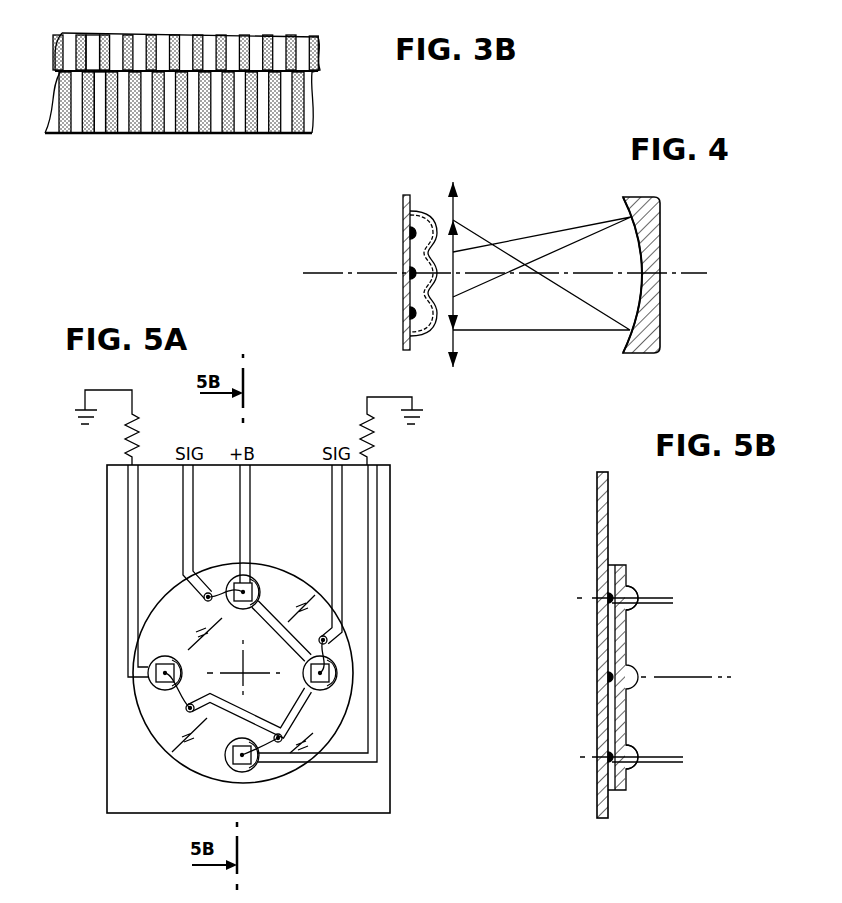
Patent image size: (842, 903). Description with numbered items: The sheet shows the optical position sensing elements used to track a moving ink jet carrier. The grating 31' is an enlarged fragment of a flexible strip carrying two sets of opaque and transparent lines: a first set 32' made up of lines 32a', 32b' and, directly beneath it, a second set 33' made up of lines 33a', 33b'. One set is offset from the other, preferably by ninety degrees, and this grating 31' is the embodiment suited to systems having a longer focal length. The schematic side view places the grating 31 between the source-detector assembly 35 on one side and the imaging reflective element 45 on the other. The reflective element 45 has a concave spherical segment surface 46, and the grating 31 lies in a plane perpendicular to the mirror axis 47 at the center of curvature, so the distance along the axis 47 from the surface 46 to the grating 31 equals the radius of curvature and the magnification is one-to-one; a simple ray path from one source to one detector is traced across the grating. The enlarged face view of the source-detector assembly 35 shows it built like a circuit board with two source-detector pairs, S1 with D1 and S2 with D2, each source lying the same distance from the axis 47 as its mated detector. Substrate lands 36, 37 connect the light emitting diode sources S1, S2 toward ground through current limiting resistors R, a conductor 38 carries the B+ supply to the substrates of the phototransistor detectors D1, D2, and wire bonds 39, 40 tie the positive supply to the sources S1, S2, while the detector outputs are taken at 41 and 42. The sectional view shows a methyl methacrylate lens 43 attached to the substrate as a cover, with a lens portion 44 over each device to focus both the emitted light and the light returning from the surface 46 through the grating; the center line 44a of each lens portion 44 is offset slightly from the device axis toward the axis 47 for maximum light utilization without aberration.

In FIG. 3B, the grating 31' is at (207, 90).
In FIG. 3B, the first set of opaque and transparent lines 32' is at (206, 37).
In FIG. 3B, the line of first set 32a' is at (127, 37).
In FIG. 3B, the line of first set 32b' is at (63, 37).
In FIG. 3B, the second set of opaque and transparent lines 33' is at (212, 124).
In FIG. 3B, the line of second set 33a' is at (128, 124).
In FIG. 3B, the line of second set 33b' is at (72, 124).
In FIG. 4, the grating 31 is at (473, 274).
In FIG. 4, the source-detector assembly 35 is at (404, 205).
In FIG. 5A, the source-detector assembly 35 is at (385, 795).
In FIG. 5B, the source-detector assembly 35 is at (602, 508).
In FIG. 4, the imaging reflective element 45 is at (656, 200).
In FIG. 4, the concave surface 46 is at (636, 315).
In FIG. 4, the mirror axis 47 is at (582, 276).
In FIG. 5A, the mirror axis 47 is at (247, 670).
In FIG. 5B, the mirror axis 47 is at (670, 677).
In FIG. 4, the detector D1 is at (413, 228).
In FIG. 5A, the detector D1 is at (262, 592).
In FIG. 5B, the detector D1 is at (607, 584).
In FIG. 4, the detector D2 is at (410, 270).
In FIG. 5A, the detector D2 is at (326, 691).
In FIG. 5B, the detector D2 is at (607, 670).
In FIG. 4, the light source S1 is at (412, 320).
In FIG. 5A, the light source S1 is at (234, 755).
In FIG. 5B, the light source S1 is at (607, 750).
In FIG. 5A, the light source S2 is at (164, 664).
In FIG. 5A, the substrate land 36 is at (368, 530).
In FIG. 5A, the conductor 37 is at (132, 579).
In FIG. 5A, the conductor 38 is at (250, 528).
In FIG. 5A, the wire bond 39 is at (186, 707).
In FIG. 5A, the wire bond 40 is at (270, 742).
In FIG. 5A, the detector output 41 is at (190, 538).
In FIG. 5A, the detector output 42 is at (335, 510).
In FIG. 5B, the lens 43 is at (627, 565).
In FIG. 5B, the lens portion 44 is at (634, 588).
In FIG. 5B, the center line of lens portion 44a is at (646, 602).
In FIG. 5A, the current limiting resistor R is at (249, 427).